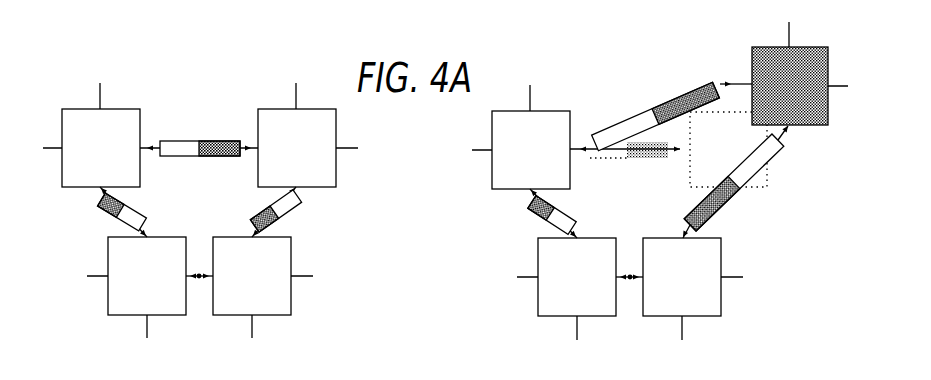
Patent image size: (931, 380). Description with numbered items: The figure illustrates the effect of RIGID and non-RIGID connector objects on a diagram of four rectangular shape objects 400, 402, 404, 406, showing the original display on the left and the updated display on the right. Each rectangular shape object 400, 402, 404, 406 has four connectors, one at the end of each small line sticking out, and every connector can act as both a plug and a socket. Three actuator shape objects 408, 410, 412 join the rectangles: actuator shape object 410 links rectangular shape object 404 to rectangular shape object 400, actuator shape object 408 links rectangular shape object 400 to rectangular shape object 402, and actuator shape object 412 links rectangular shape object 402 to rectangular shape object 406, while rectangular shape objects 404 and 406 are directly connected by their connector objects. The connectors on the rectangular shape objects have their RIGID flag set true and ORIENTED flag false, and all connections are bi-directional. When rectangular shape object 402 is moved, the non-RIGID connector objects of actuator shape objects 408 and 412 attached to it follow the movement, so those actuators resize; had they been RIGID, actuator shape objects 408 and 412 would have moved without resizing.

The rectangular shape object 400 is at (306, 136).
The rectangular shape object 402 is at (553, 104).
The rectangular shape object 404 is at (351, 288).
The rectangular shape object 406 is at (478, 288).
The actuator shape object 408 is at (453, 133).
The actuator shape object 410 is at (351, 212).
The actuator shape object 412 is at (520, 181).